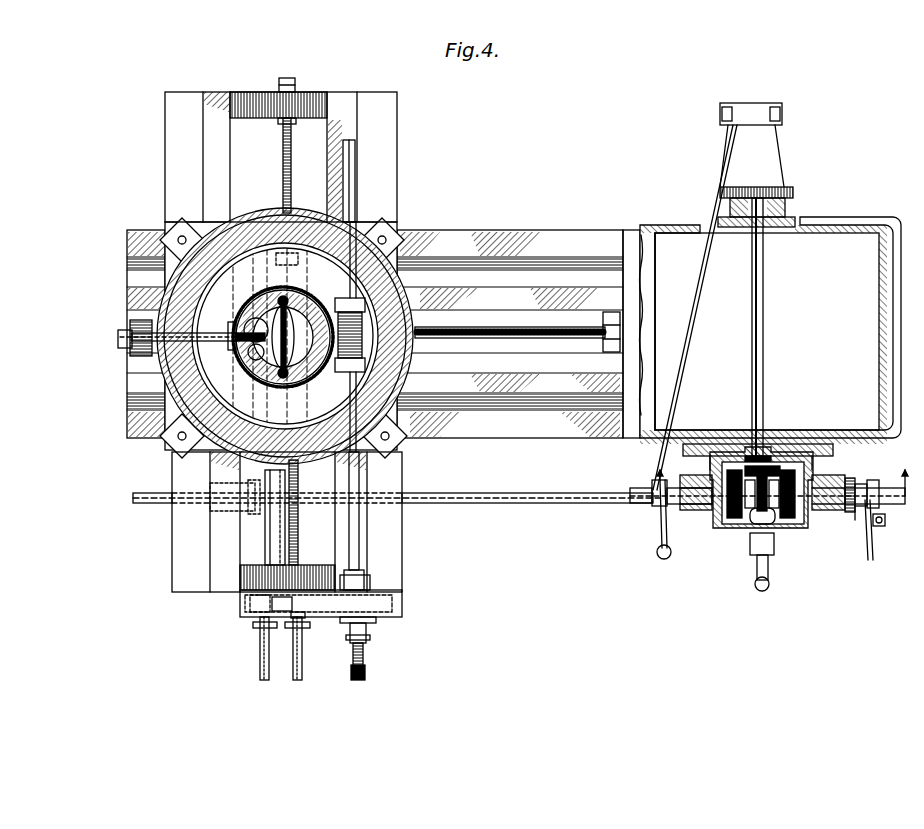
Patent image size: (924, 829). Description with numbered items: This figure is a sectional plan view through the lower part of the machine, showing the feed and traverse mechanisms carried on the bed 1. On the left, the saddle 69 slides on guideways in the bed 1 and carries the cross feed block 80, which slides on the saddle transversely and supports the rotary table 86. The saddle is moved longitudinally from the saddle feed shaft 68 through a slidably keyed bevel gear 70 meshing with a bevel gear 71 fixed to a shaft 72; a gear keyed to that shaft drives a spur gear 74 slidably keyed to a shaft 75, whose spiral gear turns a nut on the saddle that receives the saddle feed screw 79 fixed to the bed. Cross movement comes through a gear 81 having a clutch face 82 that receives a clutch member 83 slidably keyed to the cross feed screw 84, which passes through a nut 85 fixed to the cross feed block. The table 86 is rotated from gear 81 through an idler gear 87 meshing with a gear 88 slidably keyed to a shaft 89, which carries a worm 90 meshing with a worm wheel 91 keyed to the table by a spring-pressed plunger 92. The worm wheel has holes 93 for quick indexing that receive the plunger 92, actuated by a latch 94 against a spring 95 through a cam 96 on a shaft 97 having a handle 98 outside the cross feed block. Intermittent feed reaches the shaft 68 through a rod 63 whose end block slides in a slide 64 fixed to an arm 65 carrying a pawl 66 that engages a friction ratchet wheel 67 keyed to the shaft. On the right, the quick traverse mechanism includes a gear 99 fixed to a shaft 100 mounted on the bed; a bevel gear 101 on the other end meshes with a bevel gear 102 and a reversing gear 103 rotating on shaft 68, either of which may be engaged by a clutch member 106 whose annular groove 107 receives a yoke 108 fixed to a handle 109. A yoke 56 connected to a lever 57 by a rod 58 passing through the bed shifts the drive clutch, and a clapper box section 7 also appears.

The bed 1 is at (566, 232).
The section 7 is at (770, 480).
The yoke 56 is at (720, 118).
The lever 57 is at (658, 532).
The rod 58 is at (696, 290).
The rod 63 is at (878, 527).
The slide 64 is at (868, 560).
The arm 65 is at (866, 484).
The pawl 66 is at (854, 521).
The friction ratchet wheel 67 is at (852, 480).
The saddle feed shaft 68 is at (140, 508).
The saddle 69 is at (400, 535).
The bevel gear 70 is at (247, 513).
The bevel gear 71 is at (292, 514).
The shaft 72 is at (296, 542).
The spur gear 74 is at (247, 602).
The shaft 75 is at (258, 652).
The saddle feed screw 79 is at (517, 331).
The cross feed block 80 is at (395, 442).
The gear 81 is at (260, 616).
The clutch face 82 is at (272, 621).
The clutch member 83 is at (302, 623).
The cross feed screw 84 is at (284, 175).
The nut 85 is at (280, 262).
The table 86 is at (410, 353).
The idler gear 87 is at (352, 578).
The gear 88 is at (380, 608).
The shaft 89 is at (358, 521).
The worm 90 is at (340, 366).
The worm wheel 91 is at (290, 381).
The spring-pressed plunger 92 is at (284, 383).
The holes 93 is at (288, 310).
The latch 94 is at (243, 318).
The spring 95 is at (256, 364).
The cam 96 is at (237, 333).
The shaft 97 is at (230, 341).
The handle 98 is at (134, 340).
The gear 99 is at (790, 192).
The shaft 100 is at (763, 312).
The bevel gear 101 is at (752, 452).
The bevel gear 102 is at (732, 524).
The reversing gear 103 is at (802, 525).
The clutch member 106 is at (752, 519).
The annular groove 107 is at (767, 511).
The yoke 108 is at (768, 558).
The handle 109 is at (762, 591).